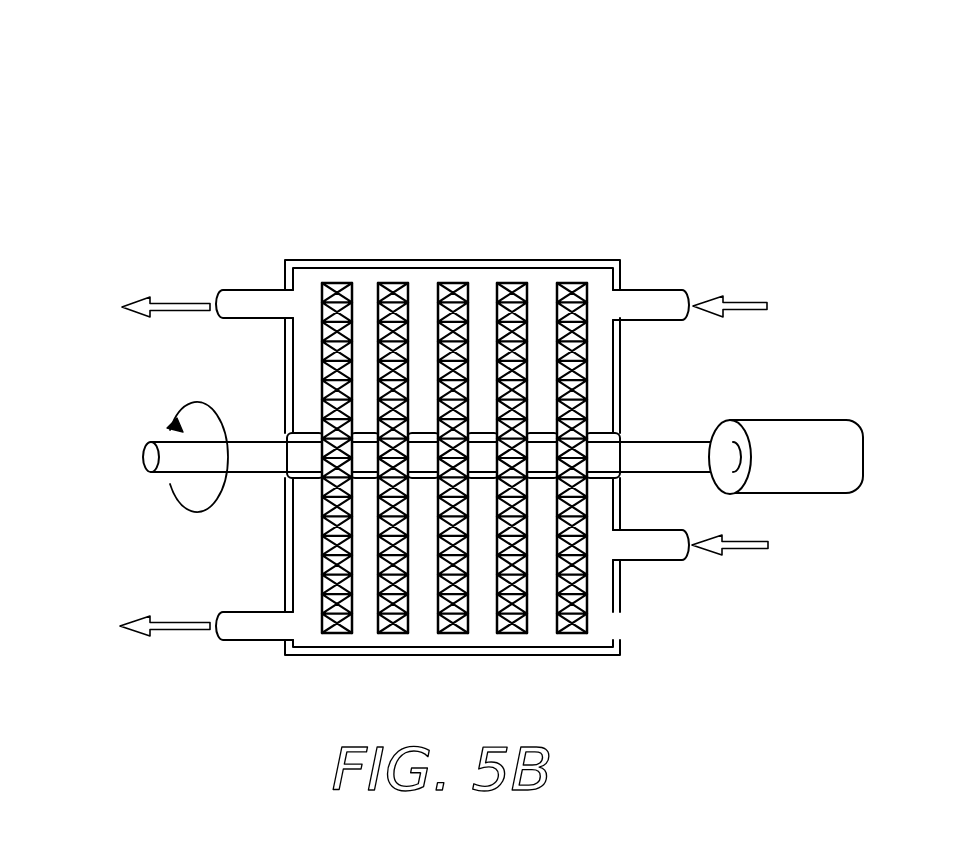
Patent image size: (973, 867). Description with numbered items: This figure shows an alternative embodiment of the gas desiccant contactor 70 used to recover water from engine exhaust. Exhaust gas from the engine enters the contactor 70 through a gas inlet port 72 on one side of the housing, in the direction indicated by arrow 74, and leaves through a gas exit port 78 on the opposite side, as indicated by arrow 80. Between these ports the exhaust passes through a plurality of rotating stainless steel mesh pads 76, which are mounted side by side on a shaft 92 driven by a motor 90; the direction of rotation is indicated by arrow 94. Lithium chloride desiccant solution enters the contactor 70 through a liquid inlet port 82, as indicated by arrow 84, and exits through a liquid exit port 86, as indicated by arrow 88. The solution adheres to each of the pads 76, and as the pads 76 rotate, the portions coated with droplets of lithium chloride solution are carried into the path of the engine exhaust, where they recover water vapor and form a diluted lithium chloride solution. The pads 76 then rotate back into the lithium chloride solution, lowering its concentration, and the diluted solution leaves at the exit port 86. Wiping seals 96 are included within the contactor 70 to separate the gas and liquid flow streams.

The gas desiccant contactor 70 is at (290, 204).
The gas inlet port 72 is at (660, 290).
The arrow 74 is at (748, 302).
The rotating stainless steel mesh pads 76 is at (333, 283).
The gas exit port 78 is at (248, 290).
The arrow 80 is at (165, 303).
The liquid inlet port 82 is at (658, 562).
The arrow 84 is at (748, 547).
The liquid exit port 86 is at (248, 612).
The arrow 88 is at (165, 622).
The motor 90 is at (767, 432).
The shaft 92 is at (668, 455).
The arrow 94 is at (222, 413).
The wiping seals 96 is at (481, 478).